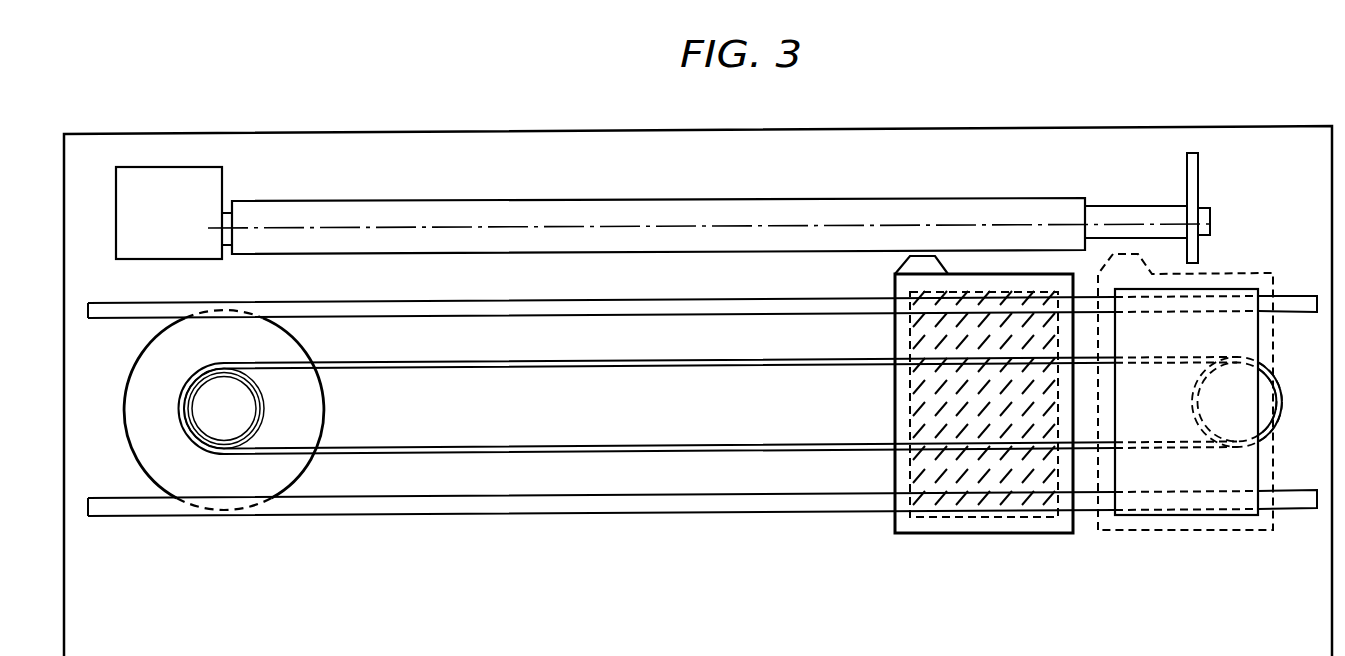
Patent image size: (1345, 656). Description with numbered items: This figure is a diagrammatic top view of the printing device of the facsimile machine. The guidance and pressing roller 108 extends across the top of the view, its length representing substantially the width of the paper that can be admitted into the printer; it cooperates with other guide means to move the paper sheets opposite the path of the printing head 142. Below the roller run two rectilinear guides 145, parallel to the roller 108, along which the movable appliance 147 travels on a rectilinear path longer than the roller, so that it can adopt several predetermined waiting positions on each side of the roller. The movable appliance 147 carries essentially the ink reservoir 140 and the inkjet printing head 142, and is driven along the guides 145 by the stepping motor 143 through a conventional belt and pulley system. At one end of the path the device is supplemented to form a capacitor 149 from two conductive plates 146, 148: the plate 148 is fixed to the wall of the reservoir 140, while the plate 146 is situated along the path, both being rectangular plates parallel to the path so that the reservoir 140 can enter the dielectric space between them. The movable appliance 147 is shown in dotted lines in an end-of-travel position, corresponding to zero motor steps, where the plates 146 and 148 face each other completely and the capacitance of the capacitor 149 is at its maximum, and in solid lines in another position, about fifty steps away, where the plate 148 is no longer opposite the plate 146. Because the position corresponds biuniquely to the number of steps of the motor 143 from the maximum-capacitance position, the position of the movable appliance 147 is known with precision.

The guidance and pressing roller 108 is at (797, 210).
The ink reservoir 140 is at (897, 338).
The printing head 142 is at (901, 266).
The drive motor 143 is at (313, 417).
The rectilinear guides 145 is at (554, 310).
The conductive plate 146 is at (1200, 530).
The movable appliance 147 is at (893, 393).
The conductive plate 148 is at (1000, 517).
The capacitor 149 is at (1147, 521).